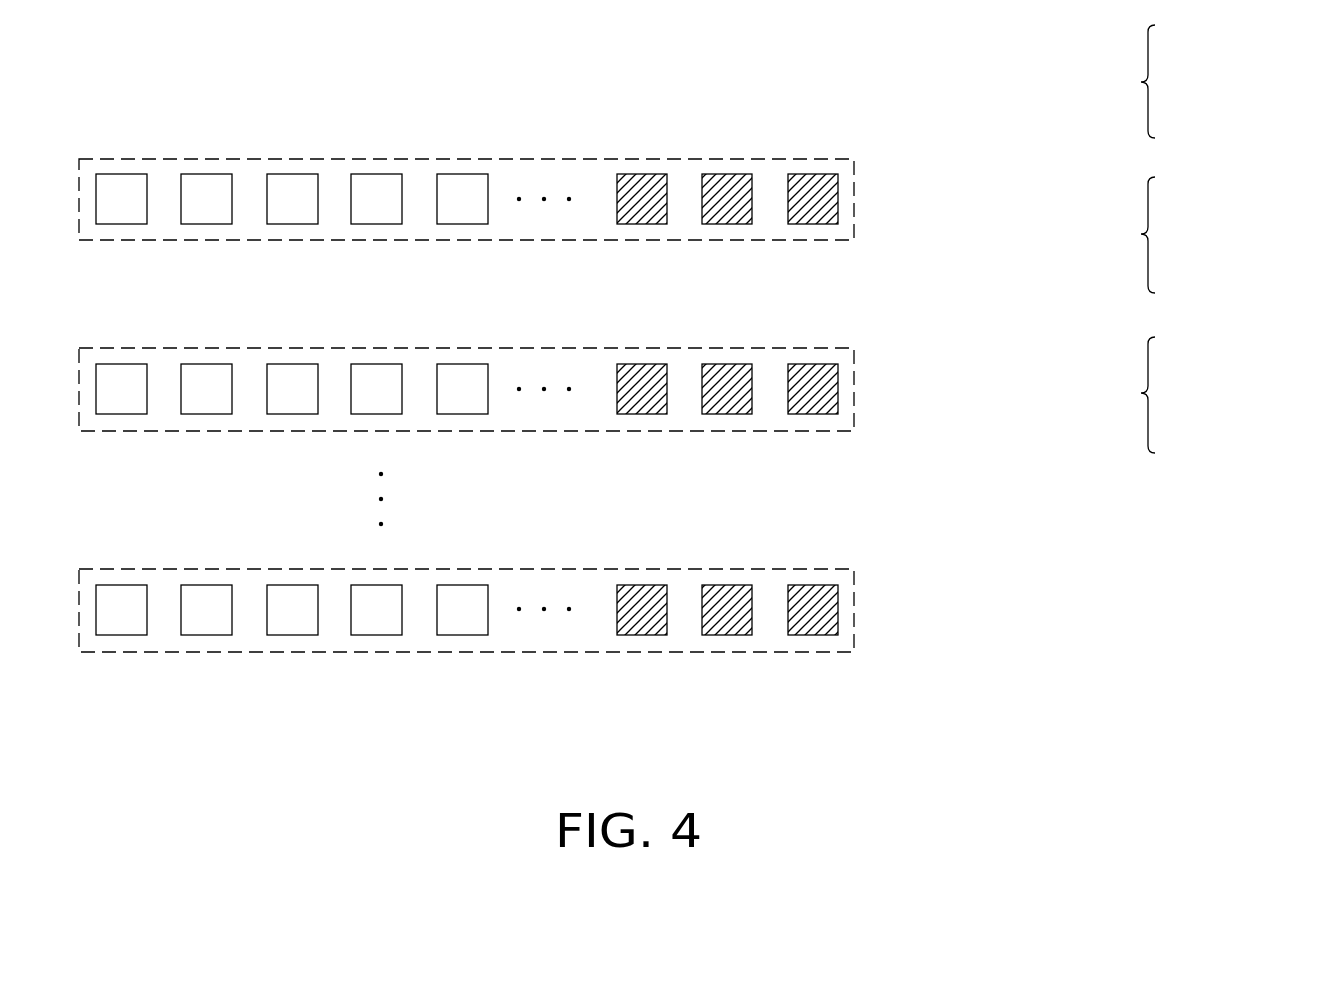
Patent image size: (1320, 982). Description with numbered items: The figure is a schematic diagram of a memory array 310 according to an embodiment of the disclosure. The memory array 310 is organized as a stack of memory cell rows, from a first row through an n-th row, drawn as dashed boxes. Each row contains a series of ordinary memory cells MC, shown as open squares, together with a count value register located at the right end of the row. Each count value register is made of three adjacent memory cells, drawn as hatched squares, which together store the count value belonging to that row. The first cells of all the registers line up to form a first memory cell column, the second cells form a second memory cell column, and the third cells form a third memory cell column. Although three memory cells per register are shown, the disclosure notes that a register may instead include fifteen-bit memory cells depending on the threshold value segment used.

The memory array 310 is at (977, 729).
The memory cell MC is at (121, 174).